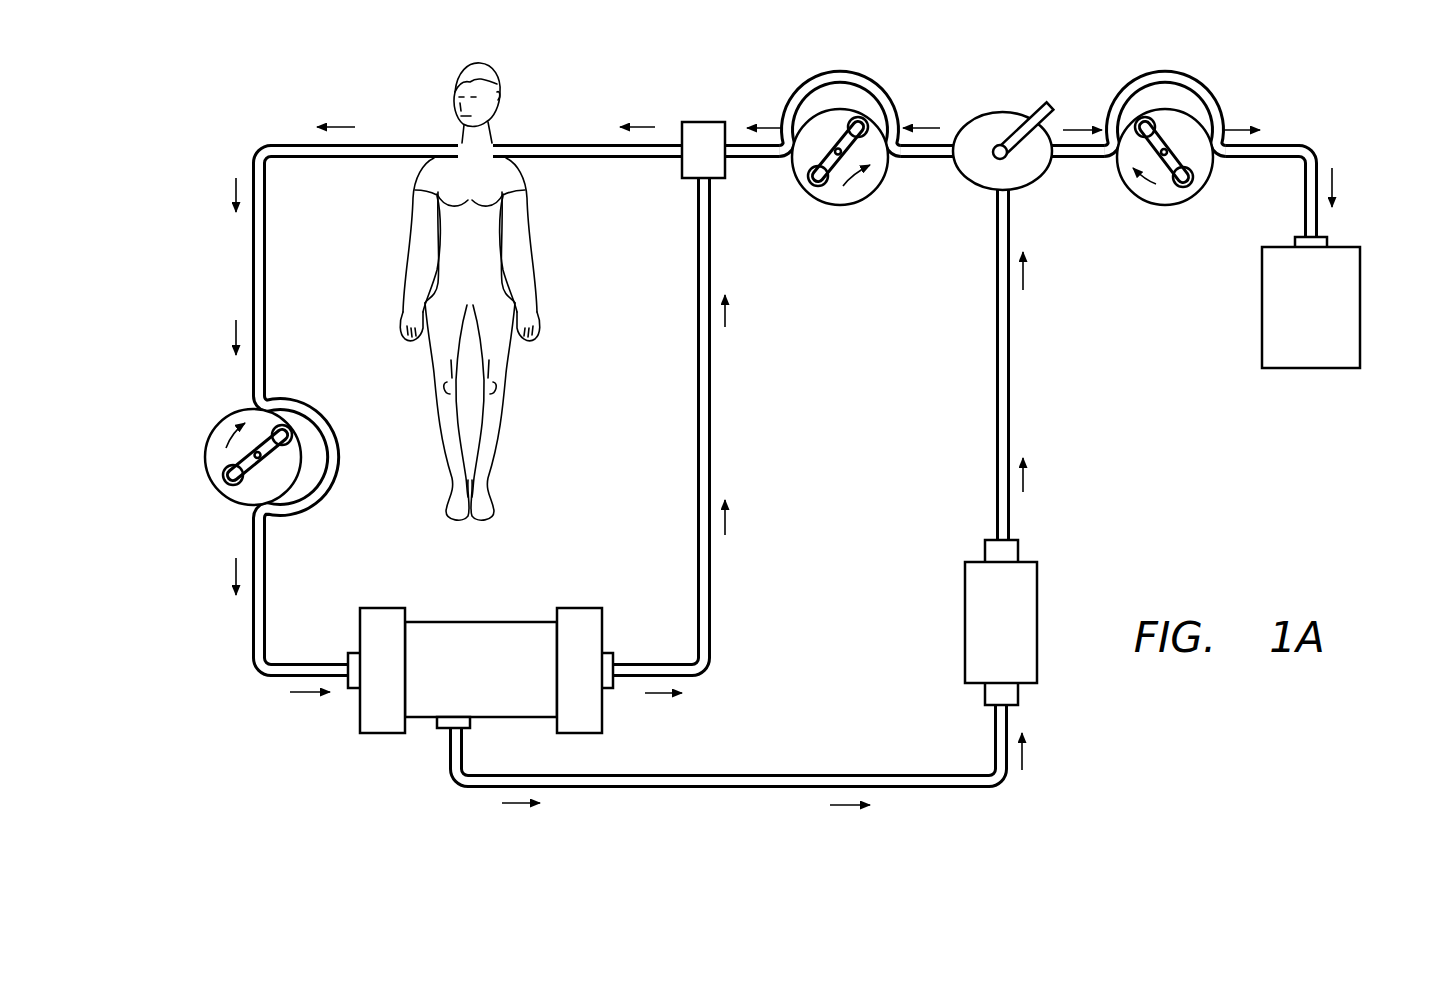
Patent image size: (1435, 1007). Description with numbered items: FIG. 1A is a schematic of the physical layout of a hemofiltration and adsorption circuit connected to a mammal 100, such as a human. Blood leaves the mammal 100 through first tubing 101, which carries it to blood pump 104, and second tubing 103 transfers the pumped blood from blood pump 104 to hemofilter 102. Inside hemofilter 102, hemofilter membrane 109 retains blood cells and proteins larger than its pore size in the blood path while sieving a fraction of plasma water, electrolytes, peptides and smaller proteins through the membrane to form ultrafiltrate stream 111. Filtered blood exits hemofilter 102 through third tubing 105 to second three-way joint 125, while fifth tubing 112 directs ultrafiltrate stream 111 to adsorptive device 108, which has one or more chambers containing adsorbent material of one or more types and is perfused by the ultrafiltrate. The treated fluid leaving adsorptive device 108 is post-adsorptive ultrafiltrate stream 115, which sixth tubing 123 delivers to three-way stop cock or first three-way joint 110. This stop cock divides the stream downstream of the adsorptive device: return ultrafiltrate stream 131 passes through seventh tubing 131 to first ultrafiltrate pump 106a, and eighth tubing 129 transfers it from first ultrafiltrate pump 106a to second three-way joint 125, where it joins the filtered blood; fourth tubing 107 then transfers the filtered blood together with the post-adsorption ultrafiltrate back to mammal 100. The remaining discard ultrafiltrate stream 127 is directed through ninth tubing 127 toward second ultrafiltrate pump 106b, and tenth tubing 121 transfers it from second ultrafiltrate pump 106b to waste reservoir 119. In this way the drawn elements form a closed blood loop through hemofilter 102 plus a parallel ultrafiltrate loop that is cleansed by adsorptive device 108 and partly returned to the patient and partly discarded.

The mammal 100 is at (535, 206).
The first tubing 101 is at (252, 290).
The hemofilter 102 is at (480, 667).
The second tubing 103 is at (249, 620).
The blood pump 104 is at (205, 456).
The third tubing 105 is at (712, 412).
The first ultrafiltrate pump 106a is at (843, 205).
The second ultrafiltrate pump 106b is at (1167, 205).
The fourth tubing 107 is at (585, 142).
The adsorptive device 108 is at (1037, 620).
The hemofilter membrane 109 is at (492, 708).
The three-way stop cock or first three-way joint 110 is at (1003, 112).
The ultrafiltrate stream 111 is at (447, 760).
The fifth tubing 112 is at (660, 790).
The post-adsorptive ultrafiltrate stream 115 is at (1010, 382).
The waste reservoir 119 is at (1362, 302).
The tenth tubing 121 is at (1283, 145).
The sixth tubing 123 is at (996, 308).
The second three-way joint 125 is at (705, 122).
The ninth tubing 127 is at (1076, 160).
The eighth tubing 129 is at (752, 160).
The seventh tubing 131 is at (912, 160).